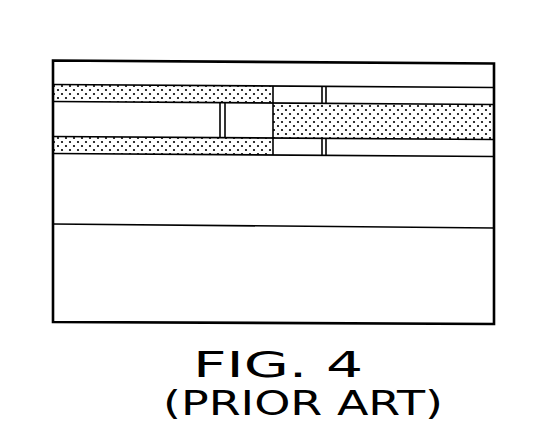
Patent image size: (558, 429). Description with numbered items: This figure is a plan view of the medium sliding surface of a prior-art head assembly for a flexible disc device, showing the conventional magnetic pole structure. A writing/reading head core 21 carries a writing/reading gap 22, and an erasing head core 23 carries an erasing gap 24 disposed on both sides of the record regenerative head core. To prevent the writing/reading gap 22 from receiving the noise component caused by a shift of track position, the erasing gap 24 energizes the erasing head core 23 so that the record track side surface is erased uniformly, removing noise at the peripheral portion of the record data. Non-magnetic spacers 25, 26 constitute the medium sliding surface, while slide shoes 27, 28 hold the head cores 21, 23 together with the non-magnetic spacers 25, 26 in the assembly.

The writing/reading head core 21 is at (66, 118).
The writing/reading gap 22 is at (221, 117).
The erasing head core 23 is at (491, 148).
The erasing gap 24 is at (326, 147).
The non-magnetic spacer 25 is at (152, 148).
The non-magnetic spacer 26 is at (374, 110).
The slide shoe 27 is at (480, 52).
The slide shoe 28 is at (487, 282).